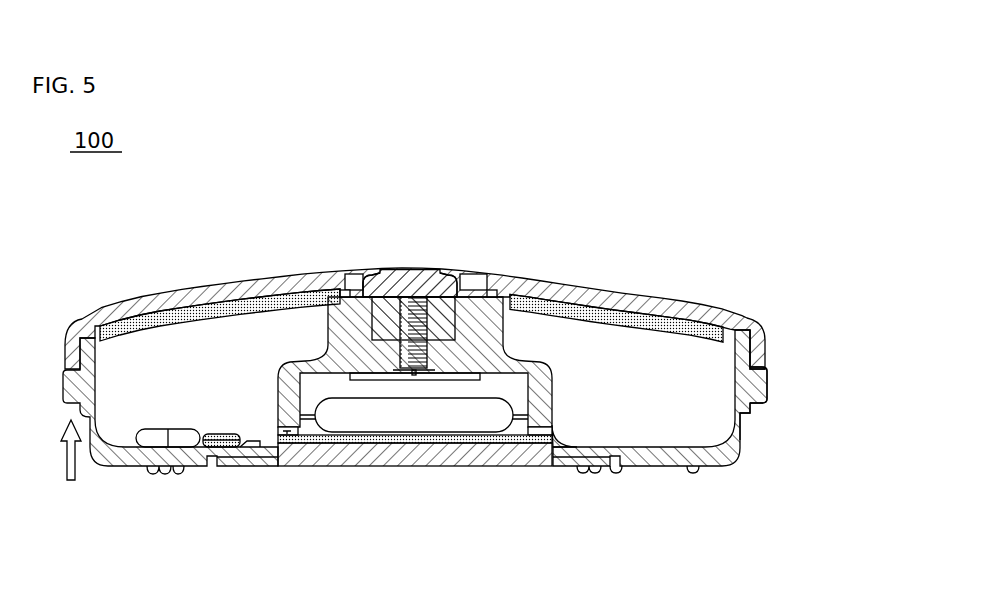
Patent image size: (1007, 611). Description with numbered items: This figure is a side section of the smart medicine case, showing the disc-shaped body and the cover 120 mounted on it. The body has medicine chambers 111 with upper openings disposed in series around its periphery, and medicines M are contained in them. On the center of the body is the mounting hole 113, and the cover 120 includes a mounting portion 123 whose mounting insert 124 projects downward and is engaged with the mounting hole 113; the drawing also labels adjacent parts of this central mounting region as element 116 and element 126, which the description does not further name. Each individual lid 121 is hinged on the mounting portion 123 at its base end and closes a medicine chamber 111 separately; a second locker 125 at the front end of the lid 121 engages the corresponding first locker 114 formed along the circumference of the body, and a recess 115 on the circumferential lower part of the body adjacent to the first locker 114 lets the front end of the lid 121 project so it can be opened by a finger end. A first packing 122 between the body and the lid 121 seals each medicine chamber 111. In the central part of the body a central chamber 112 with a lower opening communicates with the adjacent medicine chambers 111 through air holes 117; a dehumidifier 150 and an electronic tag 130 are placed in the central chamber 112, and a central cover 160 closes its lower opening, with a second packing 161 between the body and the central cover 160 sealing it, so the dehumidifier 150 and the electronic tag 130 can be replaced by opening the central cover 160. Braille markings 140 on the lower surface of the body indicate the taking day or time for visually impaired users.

The medicine chamber 111 is at (201, 368).
The central chamber 112 is at (442, 392).
The mounting hole 113 is at (444, 296).
The first locker 114 is at (759, 364).
The recess 115 is at (745, 428).
The boss 116 is at (374, 312).
The air hole 117 is at (288, 434).
The cover 120 is at (460, 284).
The individual lid 121 is at (697, 305).
The first packing 122 is at (570, 303).
The mounting portion 123 is at (415, 282).
The mounting insert 124 is at (352, 290).
The second locker 125 is at (759, 341).
The hook 126 is at (495, 290).
The electronic tag 130 is at (357, 383).
The Braille marking 140 is at (173, 475).
The dehumidifier 150 is at (387, 425).
The central cover 160 is at (487, 460).
The second packing 161 is at (533, 443).
The medicines M is at (146, 440).